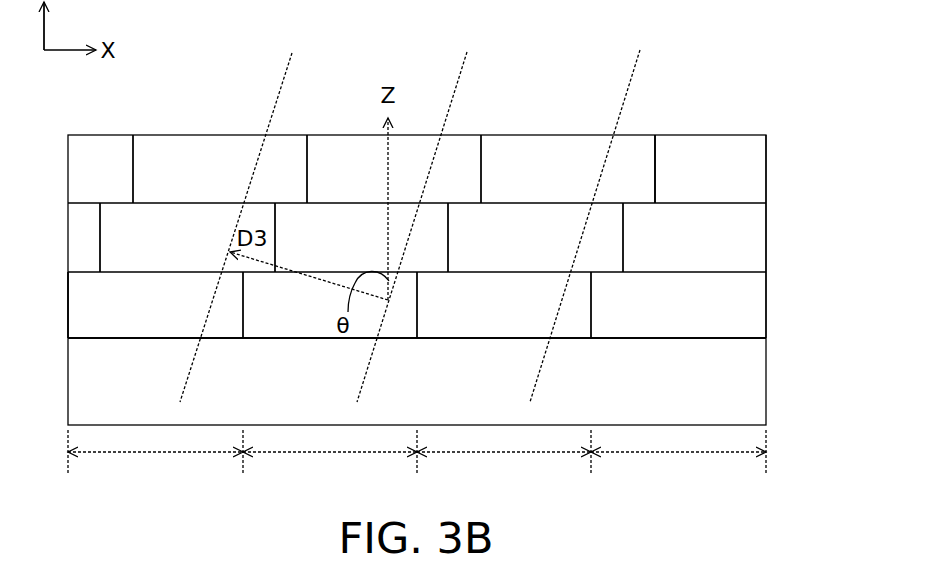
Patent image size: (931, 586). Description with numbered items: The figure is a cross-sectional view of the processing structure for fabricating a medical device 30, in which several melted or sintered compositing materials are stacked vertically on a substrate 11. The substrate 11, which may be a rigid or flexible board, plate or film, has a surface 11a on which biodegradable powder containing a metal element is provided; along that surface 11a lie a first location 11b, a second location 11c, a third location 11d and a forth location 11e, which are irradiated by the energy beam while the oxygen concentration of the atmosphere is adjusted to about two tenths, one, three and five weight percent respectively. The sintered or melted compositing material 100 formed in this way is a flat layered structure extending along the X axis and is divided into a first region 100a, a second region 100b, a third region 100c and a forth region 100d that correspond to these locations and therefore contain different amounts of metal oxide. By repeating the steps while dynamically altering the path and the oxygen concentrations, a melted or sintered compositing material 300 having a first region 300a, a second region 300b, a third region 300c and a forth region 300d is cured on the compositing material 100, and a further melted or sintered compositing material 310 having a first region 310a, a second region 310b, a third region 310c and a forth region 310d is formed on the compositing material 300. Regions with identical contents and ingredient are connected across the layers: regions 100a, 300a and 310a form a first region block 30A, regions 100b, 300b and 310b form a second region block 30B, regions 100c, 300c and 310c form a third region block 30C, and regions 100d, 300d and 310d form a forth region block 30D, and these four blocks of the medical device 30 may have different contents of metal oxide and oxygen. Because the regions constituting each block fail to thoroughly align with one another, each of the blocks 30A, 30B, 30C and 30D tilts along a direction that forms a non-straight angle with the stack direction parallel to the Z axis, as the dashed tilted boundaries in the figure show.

The medical device 30 is at (42, 96).
The first region block 30A is at (293, 117).
The second region block 30B is at (464, 118).
The third region block 30C is at (607, 118).
The forth region block 30D is at (731, 118).
The melted or sintered compositing material 310 is at (74, 166).
The first region 310a is at (191, 181).
The second region 310b is at (319, 181).
The third region 310c is at (541, 181).
The forth region 310d is at (683, 181).
The melted or sintered compositing material 300 is at (74, 234).
The first region 300a is at (160, 249).
The second region 300b is at (309, 249).
The third region 300c is at (509, 249).
The forth region 300d is at (666, 249).
The compositing material 100 is at (74, 301).
The first region 100a is at (128, 316).
The second region 100b is at (263, 316).
The third region 100c is at (477, 316).
The forth region 100d is at (651, 316).
The substrate 11 is at (752, 381).
The surface 11a is at (755, 337).
The first location 11b is at (155, 455).
The second location 11c is at (330, 455).
The third location 11d is at (504, 455).
The forth location 11e is at (678, 455).